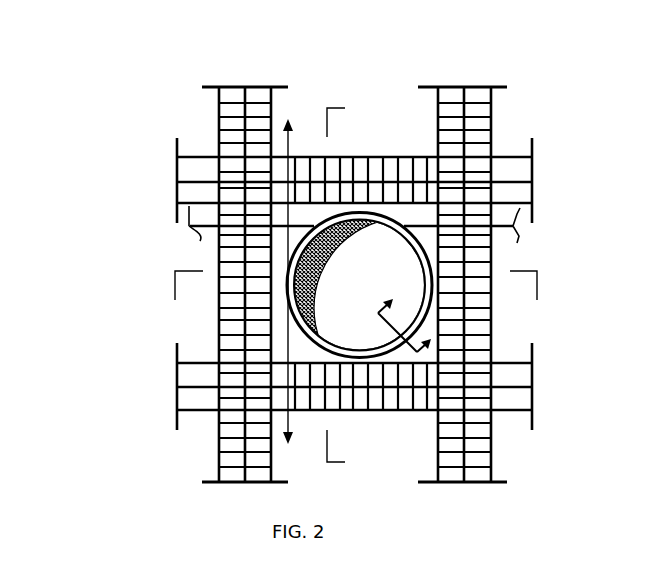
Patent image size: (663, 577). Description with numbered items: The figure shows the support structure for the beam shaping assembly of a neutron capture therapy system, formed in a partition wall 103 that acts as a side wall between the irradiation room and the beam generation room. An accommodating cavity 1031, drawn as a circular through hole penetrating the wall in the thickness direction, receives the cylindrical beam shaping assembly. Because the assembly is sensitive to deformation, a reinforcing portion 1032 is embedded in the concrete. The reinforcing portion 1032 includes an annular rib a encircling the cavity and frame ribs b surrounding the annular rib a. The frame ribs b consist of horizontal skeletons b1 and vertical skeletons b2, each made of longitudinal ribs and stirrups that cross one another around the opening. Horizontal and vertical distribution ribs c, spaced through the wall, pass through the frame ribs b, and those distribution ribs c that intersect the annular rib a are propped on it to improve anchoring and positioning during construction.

The partition wall 103 is at (50, 61).
The accommodating cavity 1031 is at (413, 259).
The reinforcing portion 1032 is at (157, 180).
The annular rib a is at (367, 211).
The frame ribs b is at (214, 449).
The horizontal skeletons b1 is at (521, 196).
The vertical skeletons b2 is at (222, 106).
The horizontal and vertical distribution ribs c is at (292, 233).